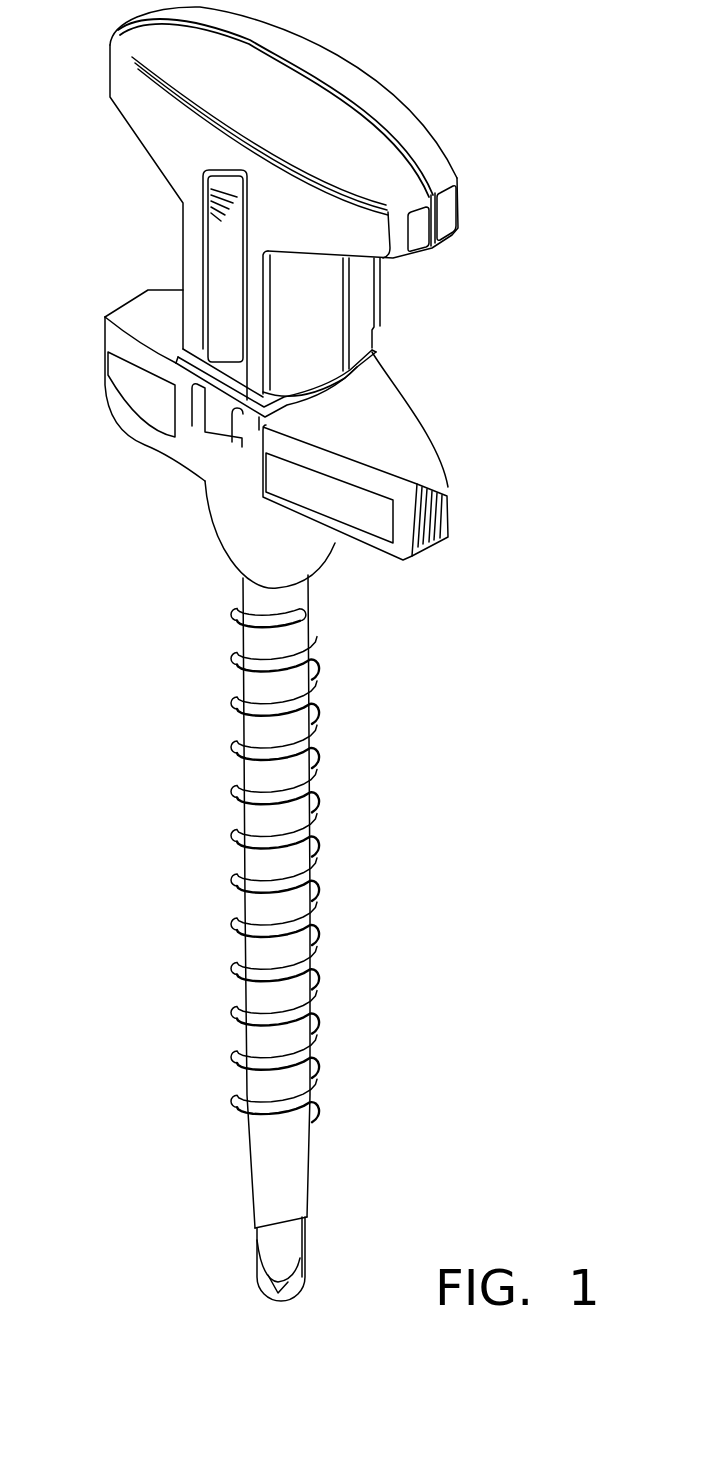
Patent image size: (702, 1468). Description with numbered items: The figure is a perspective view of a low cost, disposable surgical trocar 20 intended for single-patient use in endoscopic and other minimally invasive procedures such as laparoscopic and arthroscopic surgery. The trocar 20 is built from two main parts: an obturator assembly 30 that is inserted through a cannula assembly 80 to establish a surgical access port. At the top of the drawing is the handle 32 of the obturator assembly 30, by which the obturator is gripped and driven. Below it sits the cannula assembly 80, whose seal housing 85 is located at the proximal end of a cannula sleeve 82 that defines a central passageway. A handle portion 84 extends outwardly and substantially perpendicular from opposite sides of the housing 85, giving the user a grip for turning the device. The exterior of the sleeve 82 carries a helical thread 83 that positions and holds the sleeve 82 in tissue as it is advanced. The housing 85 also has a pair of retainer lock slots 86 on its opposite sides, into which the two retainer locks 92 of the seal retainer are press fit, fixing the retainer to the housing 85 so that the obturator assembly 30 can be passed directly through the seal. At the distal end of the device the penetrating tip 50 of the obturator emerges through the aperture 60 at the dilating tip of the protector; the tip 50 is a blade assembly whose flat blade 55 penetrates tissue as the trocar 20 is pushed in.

The surgical trocar 20 is at (538, 270).
The obturator assembly 30 is at (122, 180).
The handle 32 is at (417, 138).
The penetrating tip 50 is at (317, 1314).
The flat blade 55 is at (275, 1300).
The aperture 60 is at (264, 1247).
The cannula assembly 80 is at (367, 831).
The cannula sleeve 82 is at (270, 913).
The helical thread 83 is at (318, 715).
The handle portion 84 is at (408, 443).
The seal housing 85 is at (313, 568).
The retainer lock slots 86 is at (253, 480).
The retainer locks 92 is at (200, 428).